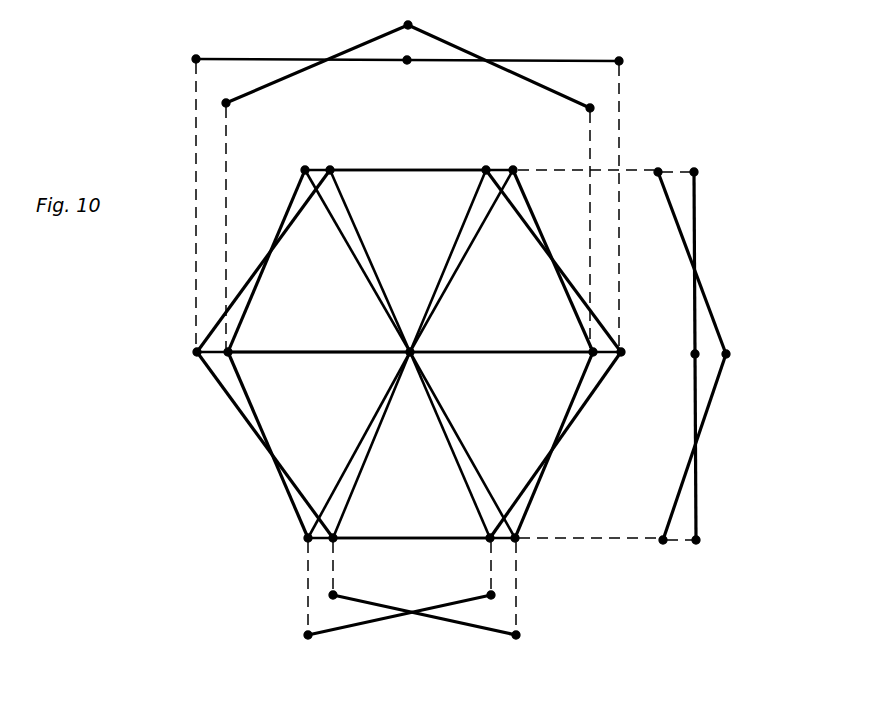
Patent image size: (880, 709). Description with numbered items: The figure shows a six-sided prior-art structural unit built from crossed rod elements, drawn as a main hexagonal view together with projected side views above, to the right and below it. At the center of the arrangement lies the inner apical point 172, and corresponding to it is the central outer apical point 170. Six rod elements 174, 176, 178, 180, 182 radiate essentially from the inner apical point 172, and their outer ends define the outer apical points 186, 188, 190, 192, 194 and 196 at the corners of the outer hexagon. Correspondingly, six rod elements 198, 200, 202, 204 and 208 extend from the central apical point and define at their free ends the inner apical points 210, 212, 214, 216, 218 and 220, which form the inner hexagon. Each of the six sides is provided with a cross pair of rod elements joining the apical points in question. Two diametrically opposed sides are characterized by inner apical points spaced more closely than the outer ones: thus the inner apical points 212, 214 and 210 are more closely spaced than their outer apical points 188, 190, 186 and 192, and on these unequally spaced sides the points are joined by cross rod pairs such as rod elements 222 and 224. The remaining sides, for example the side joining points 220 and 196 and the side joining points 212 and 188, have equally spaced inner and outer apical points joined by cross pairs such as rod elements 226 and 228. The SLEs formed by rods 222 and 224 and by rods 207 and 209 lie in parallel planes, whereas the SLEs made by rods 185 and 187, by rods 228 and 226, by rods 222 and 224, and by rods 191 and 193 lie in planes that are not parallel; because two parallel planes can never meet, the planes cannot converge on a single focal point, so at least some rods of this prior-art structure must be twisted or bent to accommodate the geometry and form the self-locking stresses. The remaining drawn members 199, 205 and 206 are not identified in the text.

The central outer apical point 170 is at (410, 25).
The inner apical point 172 is at (405, 62).
The rod element 174 is at (612, 362).
The rod element 176 is at (472, 459).
The rod element 178 is at (359, 440).
The rod element 180 is at (272, 58).
The rod element 182 is at (335, 226).
The rod 185 is at (533, 215).
The outer apical point 186 is at (622, 60).
The rod 187 is at (566, 297).
The outer apical point 188 is at (517, 541).
The outer apical point 190 is at (307, 540).
The rod 191 is at (238, 410).
The outer apical point 192 is at (194, 57).
The rod 193 is at (287, 484).
The outer apical point 194 is at (305, 168).
The outer apical point 196 is at (513, 168).
The rod element 198 is at (466, 52).
The tension member 199 is at (474, 356).
The rod element 200 is at (455, 460).
The rod element 202 is at (379, 432).
The rod element 204 is at (268, 86).
The tension member 205 is at (349, 356).
The tension member 206 is at (358, 232).
The rod 207 is at (375, 168).
The rod element 208 is at (470, 207).
The rod 209 is at (413, 173).
The inner apical point 210 is at (590, 106).
The inner apical point 212 is at (488, 537).
The inner apical point 214 is at (335, 537).
The inner apical point 216 is at (224, 102).
The inner apical point 218 is at (345, 157).
The inner apical point 220 is at (486, 168).
The cross rod element 222 is at (374, 622).
The cross rod element 224 is at (447, 623).
The cross rod element 226 is at (538, 487).
The cross rod element 228 is at (583, 412).